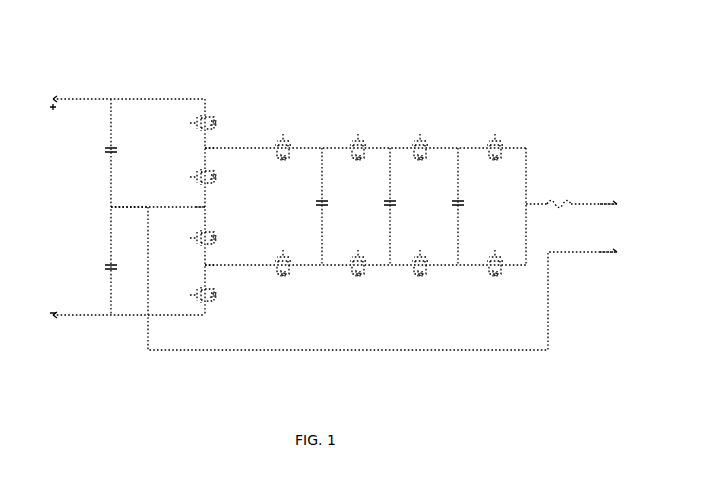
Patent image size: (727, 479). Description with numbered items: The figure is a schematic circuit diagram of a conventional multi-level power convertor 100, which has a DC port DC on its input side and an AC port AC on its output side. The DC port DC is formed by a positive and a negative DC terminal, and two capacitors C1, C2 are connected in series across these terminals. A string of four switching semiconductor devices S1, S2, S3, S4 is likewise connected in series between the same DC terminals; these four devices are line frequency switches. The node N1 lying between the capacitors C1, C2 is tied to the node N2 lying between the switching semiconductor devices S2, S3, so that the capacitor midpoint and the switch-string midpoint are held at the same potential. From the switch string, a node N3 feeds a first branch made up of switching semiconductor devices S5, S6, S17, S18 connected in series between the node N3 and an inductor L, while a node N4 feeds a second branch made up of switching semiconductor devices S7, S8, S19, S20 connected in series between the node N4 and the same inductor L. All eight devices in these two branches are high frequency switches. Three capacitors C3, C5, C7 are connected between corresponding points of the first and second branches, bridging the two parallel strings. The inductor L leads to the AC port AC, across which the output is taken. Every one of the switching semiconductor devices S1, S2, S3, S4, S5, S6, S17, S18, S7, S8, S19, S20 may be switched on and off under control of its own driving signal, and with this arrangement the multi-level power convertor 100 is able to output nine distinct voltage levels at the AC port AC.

The multi-level power convertor 100 is at (113, 60).
The DC port DC is at (65, 207).
The AC port AC is at (609, 228).
The node N1 is at (118, 208).
The node N2 is at (212, 208).
The node N3 is at (199, 148).
The node N4 is at (199, 265).
The capacitor C1 is at (104, 150).
The capacitor C2 is at (104, 267).
The capacitor C3 is at (316, 203).
The capacitor C5 is at (384, 203).
The capacitor C7 is at (452, 203).
The switching semiconductor device S1 is at (192, 123).
The switching semiconductor device S2 is at (192, 177).
The switching semiconductor device S3 is at (192, 238).
The switching semiconductor device S4 is at (192, 295).
The switching semiconductor device S5 is at (284, 138).
The switching semiconductor device S6 is at (358, 138).
The switching semiconductor device S7 is at (284, 254).
The switching semiconductor device S8 is at (358, 254).
The switching semiconductor device S17 is at (417, 138).
The switching semiconductor device S18 is at (488, 138).
The switching semiconductor device S19 is at (417, 254).
The switching semiconductor device S20 is at (488, 254).
The inductor L is at (559, 195).